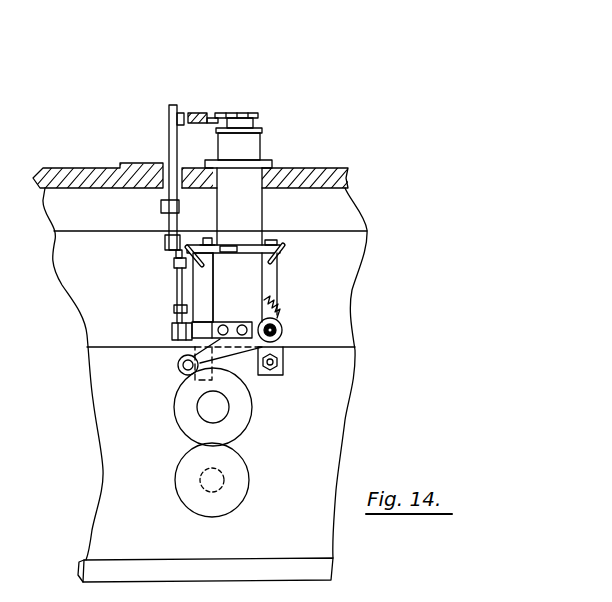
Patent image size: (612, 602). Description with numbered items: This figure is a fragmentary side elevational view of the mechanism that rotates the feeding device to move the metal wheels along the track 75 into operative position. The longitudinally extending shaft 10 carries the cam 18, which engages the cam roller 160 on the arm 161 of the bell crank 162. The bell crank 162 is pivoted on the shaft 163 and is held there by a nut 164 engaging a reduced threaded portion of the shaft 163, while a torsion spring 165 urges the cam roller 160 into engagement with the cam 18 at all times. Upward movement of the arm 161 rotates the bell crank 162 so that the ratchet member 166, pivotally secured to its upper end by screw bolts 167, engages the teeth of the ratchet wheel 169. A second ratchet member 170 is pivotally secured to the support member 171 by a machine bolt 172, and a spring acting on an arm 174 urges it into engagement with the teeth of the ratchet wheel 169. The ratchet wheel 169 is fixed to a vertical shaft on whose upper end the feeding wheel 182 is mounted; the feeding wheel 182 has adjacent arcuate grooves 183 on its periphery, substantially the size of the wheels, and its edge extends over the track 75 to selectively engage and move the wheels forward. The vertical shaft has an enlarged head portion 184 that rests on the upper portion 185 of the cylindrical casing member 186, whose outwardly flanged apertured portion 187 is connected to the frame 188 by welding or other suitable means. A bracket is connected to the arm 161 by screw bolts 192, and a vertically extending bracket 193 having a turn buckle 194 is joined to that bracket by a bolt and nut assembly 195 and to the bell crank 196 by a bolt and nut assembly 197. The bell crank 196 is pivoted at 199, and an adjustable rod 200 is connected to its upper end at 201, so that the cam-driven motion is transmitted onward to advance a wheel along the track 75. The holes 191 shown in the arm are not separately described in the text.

The shaft 10 is at (198, 417).
The cam 18 is at (255, 417).
The track 75 is at (197, 113).
The cam roller 160 is at (180, 371).
The arm 161 is at (226, 356).
The bell crank 162 is at (277, 285).
The shaft 163 is at (283, 325).
The nut 164 is at (278, 332).
The torsion spring 165 is at (275, 307).
The ratchet member 166 is at (256, 247).
The screw bolts 167 is at (282, 245).
The ratchet wheel 169 is at (223, 250).
The ratchet member 170 is at (220, 250).
The support member 171 is at (213, 288).
The machine bolt 172 is at (207, 238).
The arm 174 is at (180, 277).
The feeding wheel 182 is at (238, 112).
The grooves 183 is at (263, 115).
The enlarged head portion 184 is at (261, 130).
The upper portion 185 is at (262, 150).
The cylindrical casing member 186 is at (262, 198).
The outwardly flanged apertured portion 187 is at (210, 160).
The frame 188 is at (68, 170).
The hole 191 is at (223, 322).
The screw bolts 192 is at (246, 322).
The bracket 193 is at (175, 257).
The turn buckle 194 is at (178, 295).
The bolt and nut assembly 195 is at (173, 332).
The bell crank 196 is at (169, 131).
The bolt and nut assembly 197 is at (165, 238).
The pivot 199 is at (161, 205).
The adjustable rod 200 is at (183, 112).
The connection 201 is at (196, 112).